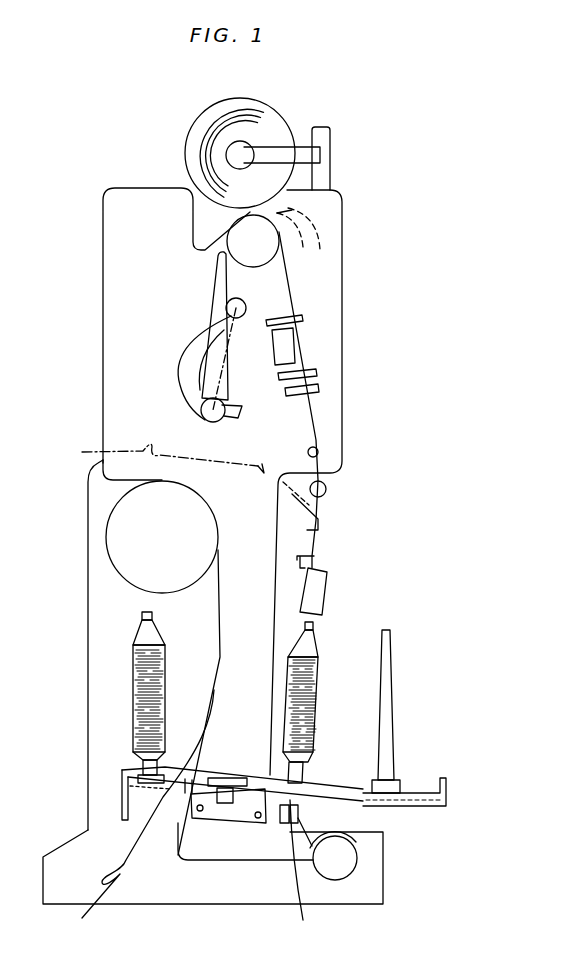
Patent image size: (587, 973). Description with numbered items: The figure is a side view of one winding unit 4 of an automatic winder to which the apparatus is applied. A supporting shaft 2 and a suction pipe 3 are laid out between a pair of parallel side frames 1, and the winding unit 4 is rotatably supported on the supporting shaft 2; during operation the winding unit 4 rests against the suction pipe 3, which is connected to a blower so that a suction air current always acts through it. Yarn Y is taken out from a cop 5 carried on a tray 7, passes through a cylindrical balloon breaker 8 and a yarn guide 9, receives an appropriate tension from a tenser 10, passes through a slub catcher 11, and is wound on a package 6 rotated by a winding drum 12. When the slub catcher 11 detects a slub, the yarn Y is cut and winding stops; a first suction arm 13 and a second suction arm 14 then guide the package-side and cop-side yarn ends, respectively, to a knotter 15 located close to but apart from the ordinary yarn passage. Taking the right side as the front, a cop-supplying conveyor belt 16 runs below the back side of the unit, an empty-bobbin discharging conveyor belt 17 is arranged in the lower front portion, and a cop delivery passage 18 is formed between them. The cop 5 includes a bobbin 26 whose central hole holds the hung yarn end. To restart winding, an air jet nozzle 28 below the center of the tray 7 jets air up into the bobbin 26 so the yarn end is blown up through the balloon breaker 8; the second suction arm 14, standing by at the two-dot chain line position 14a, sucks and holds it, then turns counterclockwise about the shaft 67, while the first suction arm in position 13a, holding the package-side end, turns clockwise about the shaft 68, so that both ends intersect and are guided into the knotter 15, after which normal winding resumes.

The side frame 1 is at (107, 605).
The supporting shaft 2 is at (340, 860).
The suction pipe 3 is at (135, 520).
The winding unit 4 is at (120, 312).
The cop 5 is at (145, 703).
The package 6 is at (262, 130).
The tray 7 is at (262, 790).
The balloon breaker 8 is at (317, 597).
The yarn guide 9 is at (313, 548).
The tenser 10 is at (326, 483).
The slub catcher 11 is at (318, 385).
The winding drum 12 is at (257, 257).
The first suction arm 13 is at (176, 385).
The first suction arm position 13a is at (303, 217).
The second suction arm 14 is at (218, 288).
The ghost image of second suction arm 14a is at (150, 455).
The knotter 15 is at (280, 347).
The cop-supplying conveyor belt 16 is at (127, 793).
The empty-bobbin discharging conveyor belt 17 is at (422, 795).
The cop delivery passage 18 is at (137, 817).
The bobbin 26 is at (387, 683).
The air jet nozzle 28 is at (310, 874).
The shaft 67 is at (200, 410).
The shaft 68 is at (243, 308).
The yarn Y is at (323, 437).